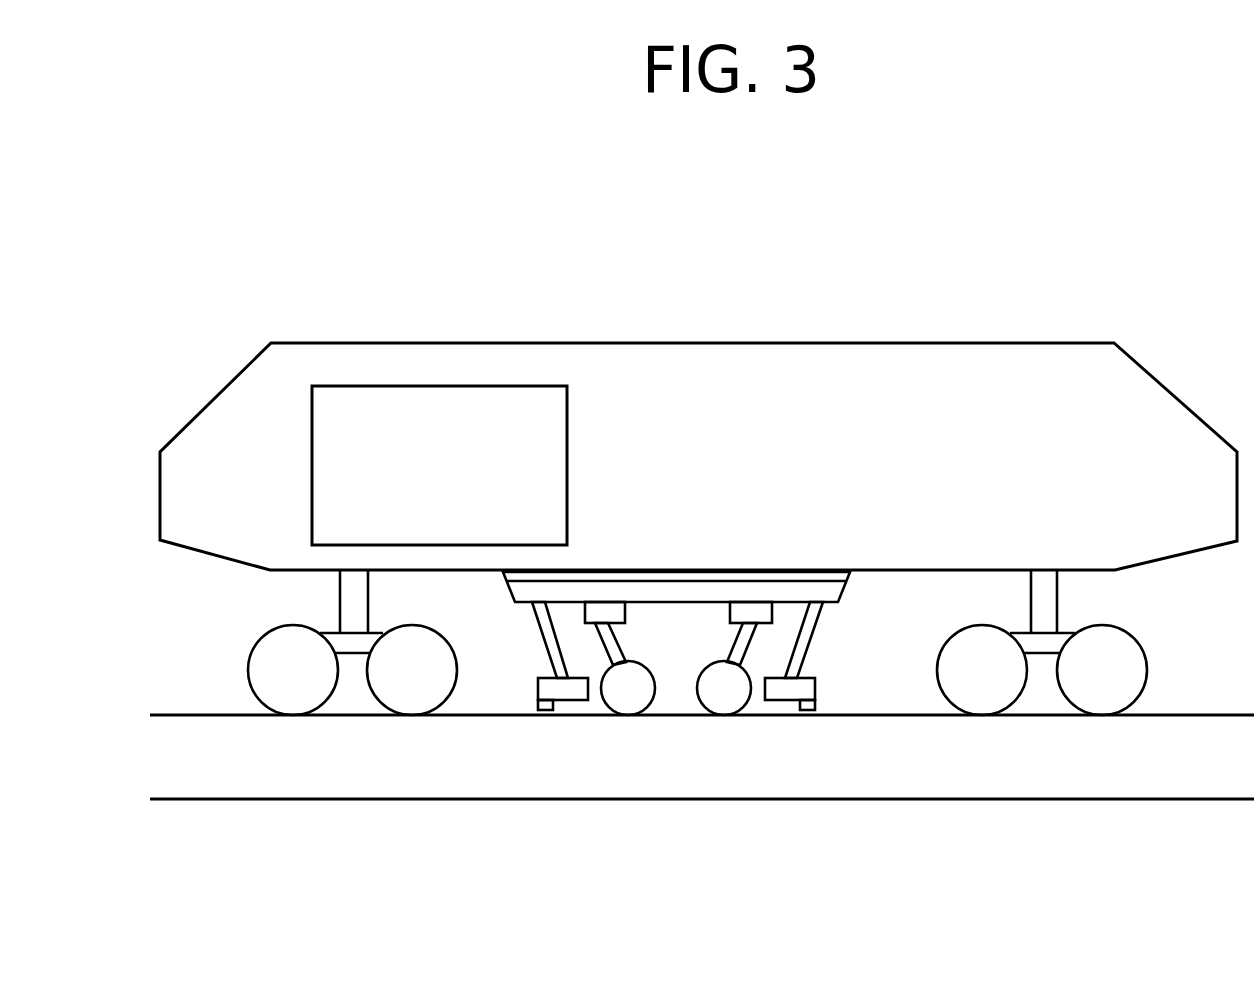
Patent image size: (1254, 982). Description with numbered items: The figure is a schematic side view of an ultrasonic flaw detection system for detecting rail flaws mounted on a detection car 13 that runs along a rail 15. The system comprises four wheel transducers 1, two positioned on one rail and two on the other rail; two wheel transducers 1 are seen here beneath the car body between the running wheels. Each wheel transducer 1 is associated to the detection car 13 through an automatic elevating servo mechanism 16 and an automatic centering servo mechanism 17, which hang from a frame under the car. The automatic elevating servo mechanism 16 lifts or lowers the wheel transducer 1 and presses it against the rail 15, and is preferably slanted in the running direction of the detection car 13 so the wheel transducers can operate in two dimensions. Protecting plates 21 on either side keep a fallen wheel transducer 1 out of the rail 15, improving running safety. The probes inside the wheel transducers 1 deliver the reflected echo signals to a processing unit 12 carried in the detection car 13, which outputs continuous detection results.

The wheel transducer 1 is at (632, 690).
The processing unit 12 is at (412, 418).
The detection car 13 is at (995, 368).
The rail 15 is at (1045, 778).
The automatic elevating servo mechanism 16 is at (738, 650).
The automatic centering servo mechanism 17 is at (605, 613).
The protecting plate 21 is at (568, 690).